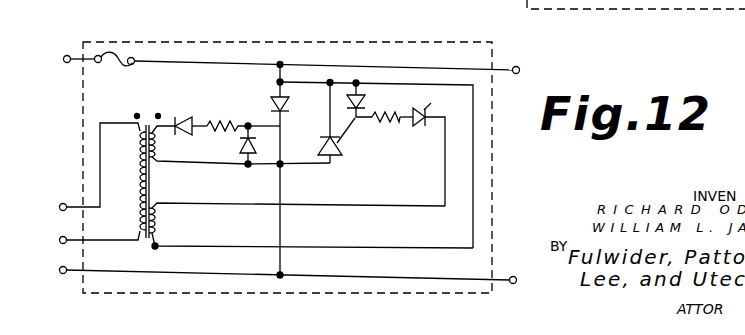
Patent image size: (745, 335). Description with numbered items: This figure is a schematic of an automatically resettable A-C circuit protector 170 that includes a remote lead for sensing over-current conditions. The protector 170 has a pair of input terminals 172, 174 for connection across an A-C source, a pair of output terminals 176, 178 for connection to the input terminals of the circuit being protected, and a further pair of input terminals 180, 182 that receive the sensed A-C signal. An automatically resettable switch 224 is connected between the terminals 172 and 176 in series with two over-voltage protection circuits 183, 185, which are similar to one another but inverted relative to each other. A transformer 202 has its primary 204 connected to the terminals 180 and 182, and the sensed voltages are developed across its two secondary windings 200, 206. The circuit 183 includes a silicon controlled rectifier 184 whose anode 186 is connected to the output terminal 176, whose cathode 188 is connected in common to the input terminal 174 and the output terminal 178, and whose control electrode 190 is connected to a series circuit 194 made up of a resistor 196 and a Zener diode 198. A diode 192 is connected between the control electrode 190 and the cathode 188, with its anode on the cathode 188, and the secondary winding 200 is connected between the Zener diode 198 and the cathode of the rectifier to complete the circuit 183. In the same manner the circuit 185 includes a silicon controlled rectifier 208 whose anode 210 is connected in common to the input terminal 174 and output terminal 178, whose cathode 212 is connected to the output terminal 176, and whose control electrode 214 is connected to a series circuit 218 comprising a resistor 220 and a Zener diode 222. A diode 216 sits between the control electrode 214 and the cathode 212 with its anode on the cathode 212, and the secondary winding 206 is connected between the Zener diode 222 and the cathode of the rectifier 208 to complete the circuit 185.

The protector 170 is at (355, 45).
The input terminal 172 is at (66, 56).
The input terminal 174 is at (61, 268).
The output terminal 176 is at (519, 68).
The output terminal 178 is at (512, 284).
The input terminal 180 is at (63, 203).
The input terminal 182 is at (62, 236).
The over-voltage protection circuit 183 is at (253, 92).
The silicon controlled rectifier 184 is at (284, 108).
The over-voltage protection circuit 185 is at (413, 167).
The anode 186 is at (277, 93).
The cathode 188 is at (279, 127).
The control electrode 190 is at (278, 132).
The diode 192 is at (232, 156).
The series circuit 194 is at (212, 104).
The resistor 196 is at (231, 111).
The Zener diode 198 is at (182, 116).
The secondary winding 200 is at (166, 145).
The transformer 202 is at (148, 116).
The primary 204 is at (134, 187).
The secondary winding 206 is at (160, 229).
The silicon controlled rectifier 208 is at (341, 156).
The anode 210 is at (325, 162).
The cathode 212 is at (333, 103).
The control electrode 214 is at (342, 137).
The diode 216 is at (366, 97).
The series circuit 218 is at (400, 110).
The resistor 220 is at (387, 122).
The Zener diode 222 is at (431, 103).
The automatically resettable switch 224 is at (118, 51).